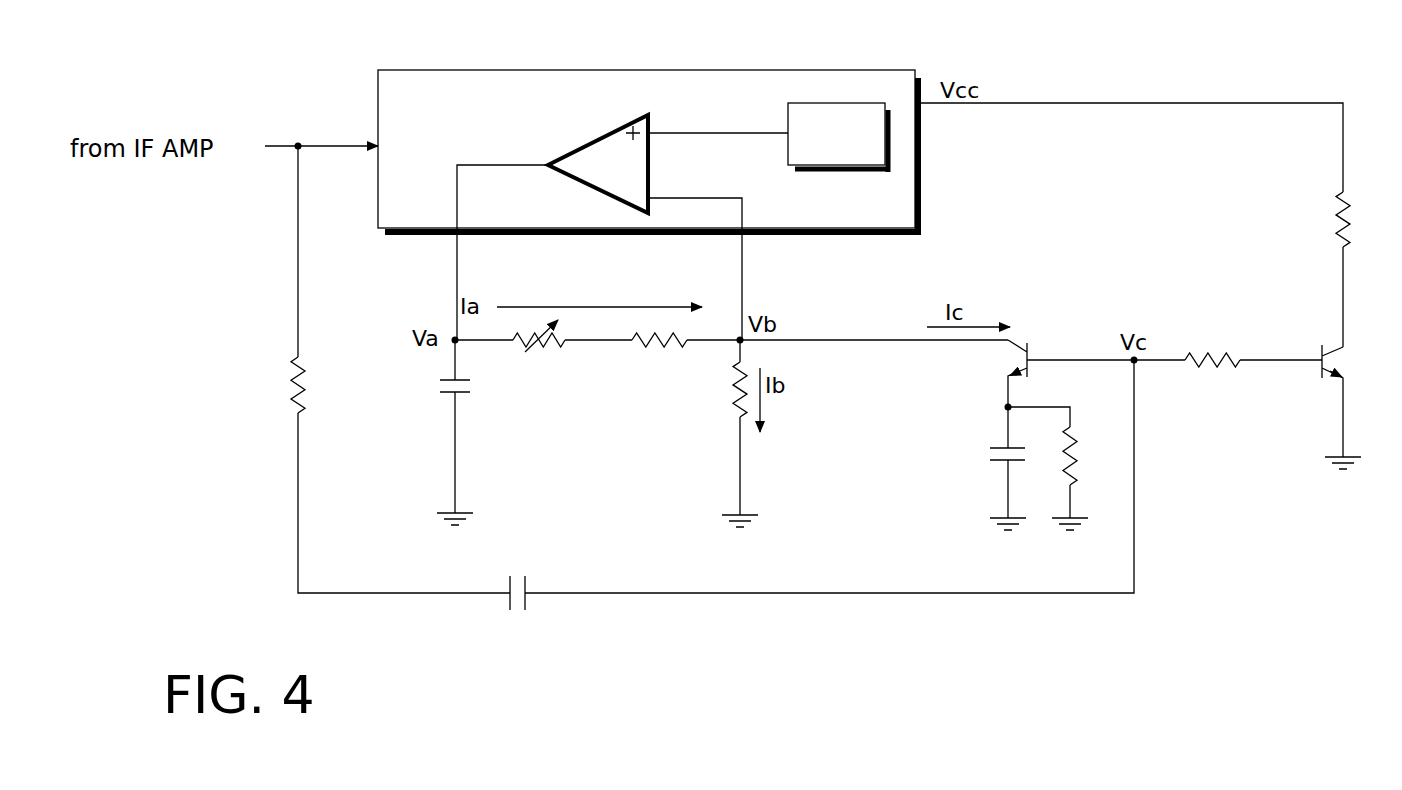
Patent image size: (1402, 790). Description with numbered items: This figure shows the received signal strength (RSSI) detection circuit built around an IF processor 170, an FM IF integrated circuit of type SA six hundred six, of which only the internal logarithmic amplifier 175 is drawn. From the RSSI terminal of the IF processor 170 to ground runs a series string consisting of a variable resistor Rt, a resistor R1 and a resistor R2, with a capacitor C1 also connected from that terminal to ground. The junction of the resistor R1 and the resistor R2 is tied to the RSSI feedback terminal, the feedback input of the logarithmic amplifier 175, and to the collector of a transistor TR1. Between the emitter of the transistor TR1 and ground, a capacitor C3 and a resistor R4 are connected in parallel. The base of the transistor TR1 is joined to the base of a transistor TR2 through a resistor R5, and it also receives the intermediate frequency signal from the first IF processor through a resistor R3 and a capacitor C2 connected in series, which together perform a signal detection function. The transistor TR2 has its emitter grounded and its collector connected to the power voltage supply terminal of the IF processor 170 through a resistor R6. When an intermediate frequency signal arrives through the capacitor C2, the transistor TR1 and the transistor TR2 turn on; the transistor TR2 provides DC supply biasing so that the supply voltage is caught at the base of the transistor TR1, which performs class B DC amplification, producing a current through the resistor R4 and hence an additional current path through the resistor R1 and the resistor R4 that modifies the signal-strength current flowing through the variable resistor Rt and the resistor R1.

The IF processor 170 is at (663, 69).
The logarithmic amplifier 175 is at (601, 140).
The resistor R1 is at (659, 355).
The resistor R2 is at (722, 427).
The resistor R3 is at (280, 385).
The resistor R4 is at (1086, 472).
The resistor R5 is at (1212, 343).
The resistor R6 is at (1360, 219).
The variable resistor Rt is at (539, 351).
The capacitor C1 is at (436, 426).
The capacitor C2 is at (514, 579).
The capacitor C3 is at (989, 462).
The transistor TR1 is at (994, 373).
The transistor TR2 is at (1356, 401).